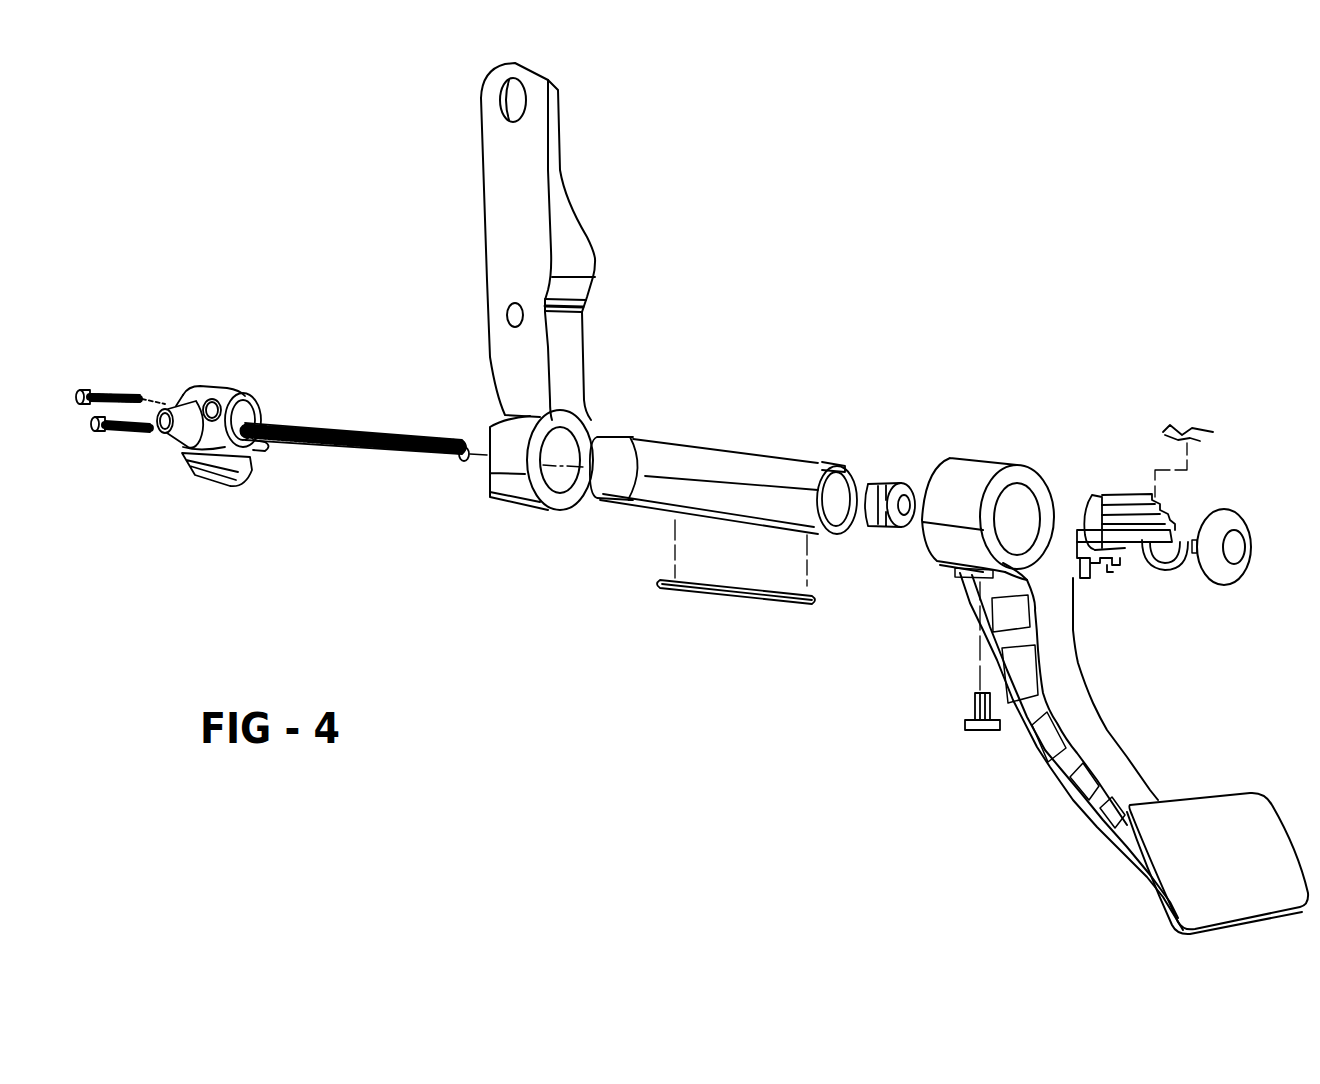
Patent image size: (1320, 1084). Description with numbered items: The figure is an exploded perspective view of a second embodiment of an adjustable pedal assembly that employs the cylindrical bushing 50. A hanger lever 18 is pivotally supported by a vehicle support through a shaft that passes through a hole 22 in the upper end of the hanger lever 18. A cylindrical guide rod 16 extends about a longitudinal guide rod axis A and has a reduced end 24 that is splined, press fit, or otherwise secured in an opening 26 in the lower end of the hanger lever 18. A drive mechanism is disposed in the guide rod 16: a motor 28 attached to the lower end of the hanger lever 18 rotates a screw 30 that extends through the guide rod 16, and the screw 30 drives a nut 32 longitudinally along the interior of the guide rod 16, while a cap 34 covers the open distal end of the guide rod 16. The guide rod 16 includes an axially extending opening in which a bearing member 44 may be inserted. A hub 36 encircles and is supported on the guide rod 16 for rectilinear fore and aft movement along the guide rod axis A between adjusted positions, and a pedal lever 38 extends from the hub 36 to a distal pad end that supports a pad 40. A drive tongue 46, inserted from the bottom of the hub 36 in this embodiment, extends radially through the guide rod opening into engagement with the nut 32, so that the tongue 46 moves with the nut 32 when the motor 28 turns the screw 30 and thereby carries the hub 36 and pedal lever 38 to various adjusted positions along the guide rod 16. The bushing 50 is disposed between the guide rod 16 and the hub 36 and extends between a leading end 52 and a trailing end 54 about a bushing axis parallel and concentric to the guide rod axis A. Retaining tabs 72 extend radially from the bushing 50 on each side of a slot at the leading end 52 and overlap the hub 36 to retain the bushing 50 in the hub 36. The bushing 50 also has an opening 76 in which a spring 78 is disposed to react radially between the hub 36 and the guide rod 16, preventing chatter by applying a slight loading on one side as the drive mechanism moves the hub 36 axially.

The guide rod 16 is at (723, 439).
The hanger lever 18 is at (515, 333).
The hole 22 is at (505, 100).
The reduced end 24 is at (622, 440).
The opening 26 is at (560, 510).
The motor 28 is at (213, 387).
The screw 30 is at (362, 420).
The nut 32 is at (888, 480).
The cap 34 is at (1249, 497).
The hub 36 is at (973, 480).
The pedal lever 38 is at (1128, 748).
The pad 40 is at (1245, 830).
The bearing member 44 is at (733, 598).
The drive tongue 46 is at (967, 703).
The cylindrical bushing 50 is at (1160, 582).
The leading end 52 is at (1157, 539).
The trailing end 54 is at (1193, 515).
The retaining tab 72 is at (1090, 575).
The opening 76 is at (1127, 577).
The spring 78 is at (1183, 428).
The guide rod axis A is at (548, 463).